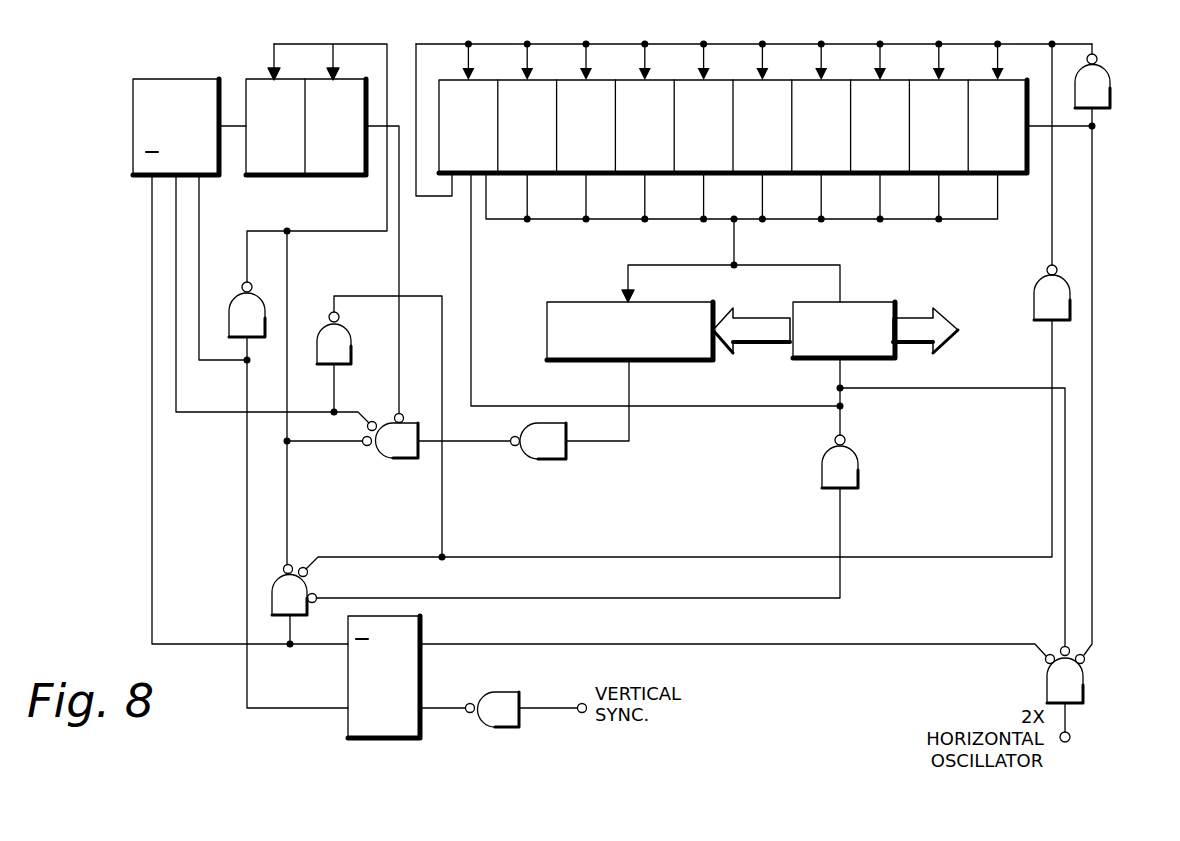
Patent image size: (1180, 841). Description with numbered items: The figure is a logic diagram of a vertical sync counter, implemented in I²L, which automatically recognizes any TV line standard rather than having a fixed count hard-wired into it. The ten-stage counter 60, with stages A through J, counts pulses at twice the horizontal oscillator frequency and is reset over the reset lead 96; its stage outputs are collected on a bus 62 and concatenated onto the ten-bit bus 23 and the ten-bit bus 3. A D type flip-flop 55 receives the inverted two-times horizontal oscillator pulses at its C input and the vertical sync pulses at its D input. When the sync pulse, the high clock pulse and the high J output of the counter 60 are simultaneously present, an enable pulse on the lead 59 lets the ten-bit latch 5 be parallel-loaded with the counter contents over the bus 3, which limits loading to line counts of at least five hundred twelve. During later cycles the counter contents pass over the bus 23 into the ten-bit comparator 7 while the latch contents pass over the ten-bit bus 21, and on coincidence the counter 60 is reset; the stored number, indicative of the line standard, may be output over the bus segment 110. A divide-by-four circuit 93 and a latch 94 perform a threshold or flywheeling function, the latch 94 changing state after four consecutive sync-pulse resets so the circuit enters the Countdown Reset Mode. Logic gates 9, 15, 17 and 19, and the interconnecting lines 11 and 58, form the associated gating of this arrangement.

The latch circuit 94 is at (190, 79).
The divide-by-four circuit 93 is at (272, 177).
The reset lead 96 is at (680, 44).
The counter output bus 62 is at (612, 217).
The counter 60 is at (985, 176).
The NAND gate 19 is at (1110, 92).
The 10-bit bus 23 is at (734, 243).
The 10-bit bus 3 is at (838, 265).
The 10-bit bus 21 is at (765, 318).
The bus segment 110 is at (915, 318).
The 10-bit comparator 7 is at (565, 362).
The 10-bit latch 5 is at (785, 360).
The lead 59 is at (838, 378).
The line 58 is at (920, 390).
The NAND gate 17 is at (1033, 300).
The NAND gate 15 is at (859, 455).
The line 11 is at (471, 285).
The NAND gate 9 is at (600, 443).
The D type flip-flop 55 is at (348, 668).